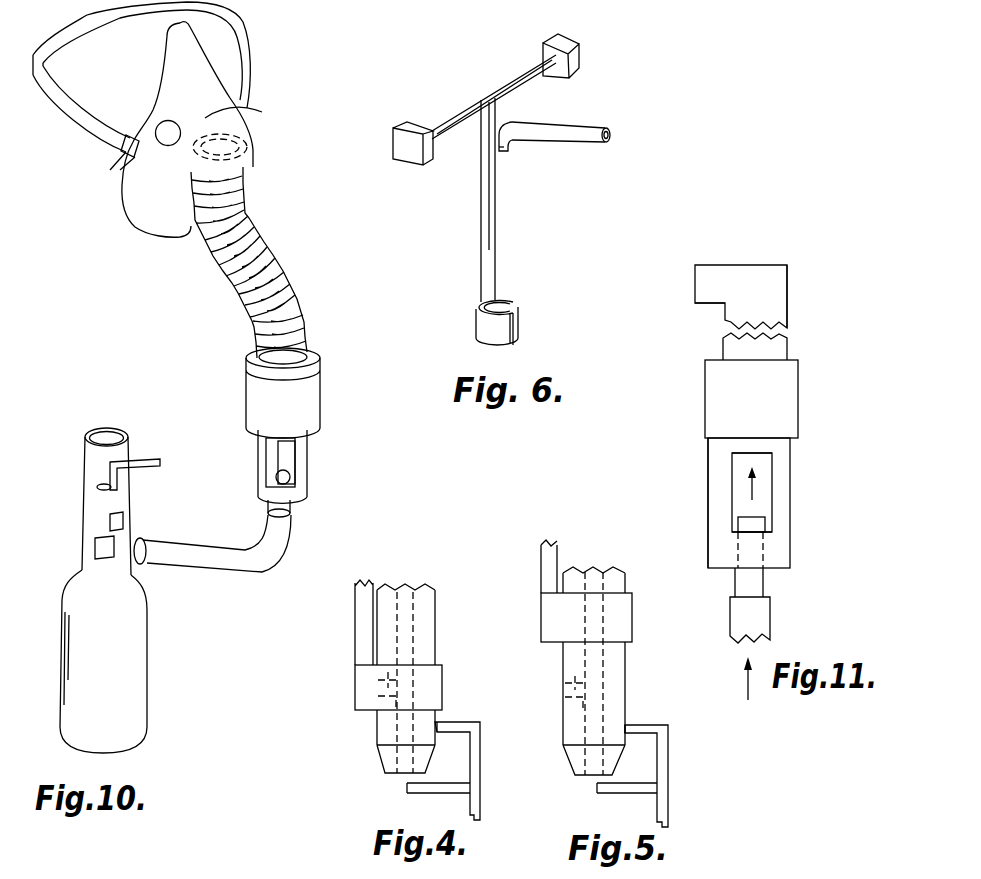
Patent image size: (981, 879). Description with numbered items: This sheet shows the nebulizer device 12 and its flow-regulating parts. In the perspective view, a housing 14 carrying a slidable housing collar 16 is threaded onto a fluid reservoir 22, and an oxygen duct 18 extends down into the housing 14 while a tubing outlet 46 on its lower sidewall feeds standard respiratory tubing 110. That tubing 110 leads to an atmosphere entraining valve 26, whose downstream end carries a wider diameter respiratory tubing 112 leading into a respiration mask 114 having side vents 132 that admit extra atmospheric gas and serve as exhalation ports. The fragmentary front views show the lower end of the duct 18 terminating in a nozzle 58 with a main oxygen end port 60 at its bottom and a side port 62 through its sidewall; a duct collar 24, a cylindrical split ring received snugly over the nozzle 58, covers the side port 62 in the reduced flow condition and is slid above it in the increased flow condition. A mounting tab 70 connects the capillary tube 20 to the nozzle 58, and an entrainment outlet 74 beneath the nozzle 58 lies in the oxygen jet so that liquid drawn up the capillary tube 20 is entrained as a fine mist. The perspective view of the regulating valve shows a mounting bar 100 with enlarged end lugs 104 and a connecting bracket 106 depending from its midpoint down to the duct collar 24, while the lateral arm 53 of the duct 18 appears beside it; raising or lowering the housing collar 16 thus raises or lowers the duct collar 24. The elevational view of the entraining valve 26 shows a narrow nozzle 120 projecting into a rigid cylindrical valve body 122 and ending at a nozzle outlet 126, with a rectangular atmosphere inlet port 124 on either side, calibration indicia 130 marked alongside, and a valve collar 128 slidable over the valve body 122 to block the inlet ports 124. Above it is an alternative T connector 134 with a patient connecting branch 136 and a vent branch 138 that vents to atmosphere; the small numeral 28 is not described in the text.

In FIG. 10, the nebulizer device 12 is at (158, 294).
In FIG. 10, the housing 14 is at (82, 567).
In FIG. 10, the housing collar 16 is at (80, 461).
In FIG. 6, the oxygen duct 18 is at (587, 125).
In FIG. 4, the capillary tube 20 is at (480, 743).
In FIG. 5, the capillary tube 20 is at (665, 807).
In FIG. 10, the fluid reservoir 22 is at (132, 676).
In FIG. 6, the duct collar 24 is at (483, 330).
In FIG. 11, the duct collar 24 is at (744, 457).
In FIG. 4, the duct collar 24 is at (423, 680).
In FIG. 5, the duct collar 24 is at (620, 625).
In FIG. 10, the atmosphere entraining valve 26 is at (250, 460).
In FIG. 11, the atmosphere entraining valve 26 is at (805, 458).
In FIG. 11, the valve seat 28 is at (742, 527).
In FIG. 10, the tubing outlet 46 is at (137, 538).
In FIG. 6, the lateral arm 53 is at (563, 132).
In FIG. 4, the nozzle 58 is at (373, 725).
In FIG. 5, the nozzle 58 is at (618, 705).
In FIG. 4, the main oxygen end port 60 is at (397, 772).
In FIG. 5, the main oxygen end port 60 is at (582, 777).
In FIG. 4, the side port 62 is at (373, 683).
In FIG. 5, the side port 62 is at (563, 693).
In FIG. 4, the mounting tab 70 is at (458, 722).
In FIG. 5, the mounting tab 70 is at (643, 725).
In FIG. 4, the entrainment outlet 74 is at (445, 783).
In FIG. 5, the entrainment outlet 74 is at (623, 785).
In FIG. 6, the mounting bar 100 is at (495, 85).
In FIG. 6, the end lugs 104 is at (407, 135).
In FIG. 6, the connecting bracket 106 is at (496, 215).
In FIG. 4, the connecting bracket 106 is at (370, 583).
In FIG. 5, the connecting bracket 106 is at (546, 563).
In FIG. 10, the respiratory tubing 110 is at (285, 577).
In FIG. 11, the respiratory tubing 110 is at (758, 622).
In FIG. 10, the wider diameter respiratory tubing 112 is at (247, 310).
In FIG. 11, the wider diameter respiratory tubing 112 is at (775, 351).
In FIG. 10, the respiration mask 114 is at (207, 118).
In FIG. 11, the nozzle 120 is at (753, 588).
In FIG. 11, the valve body 122 is at (775, 548).
In FIG. 10, the atmosphere inlet port 124 is at (290, 450).
In FIG. 11, the atmosphere inlet port 124 is at (767, 485).
In FIG. 10, the nozzle outlet 126 is at (287, 478).
In FIG. 11, the nozzle outlet 126 is at (745, 516).
In FIG. 10, the valve collar 128 is at (307, 398).
In FIG. 11, the valve collar 128 is at (782, 405).
In FIG. 11, the calibration indicia 130 is at (715, 470).
In FIG. 10, the side vents 132 is at (160, 140).
In FIG. 11, the "T" connector 134 is at (779, 312).
In FIG. 11, the patient connecting branch 136 is at (705, 283).
In FIG. 11, the vent branch 138 is at (779, 292).